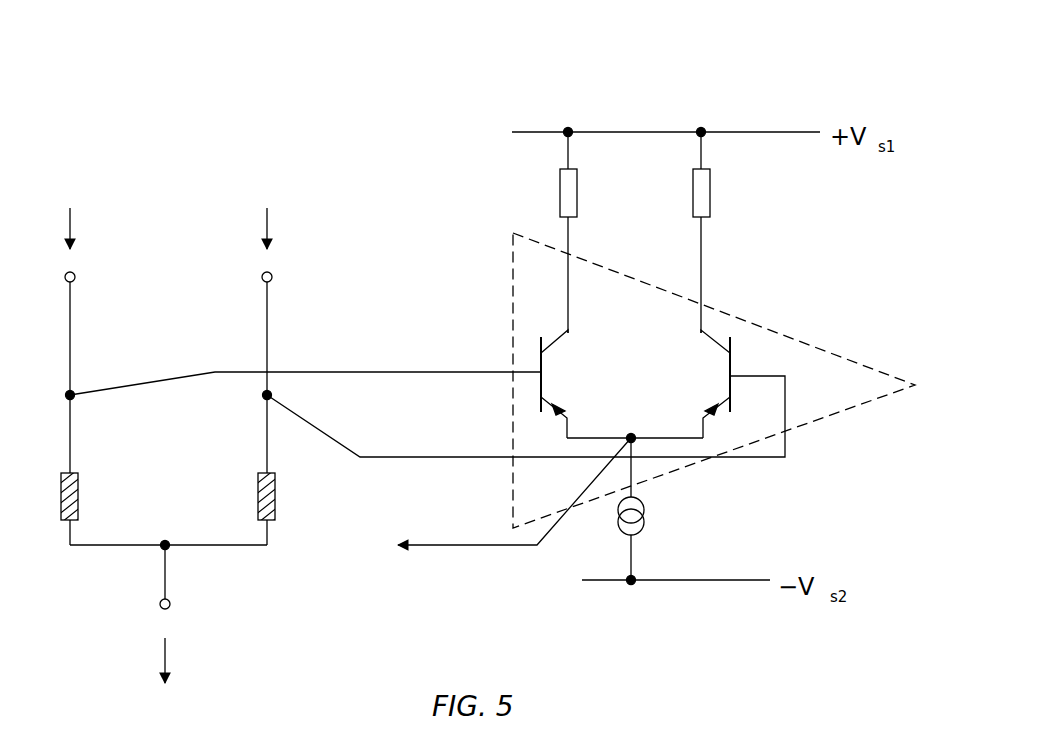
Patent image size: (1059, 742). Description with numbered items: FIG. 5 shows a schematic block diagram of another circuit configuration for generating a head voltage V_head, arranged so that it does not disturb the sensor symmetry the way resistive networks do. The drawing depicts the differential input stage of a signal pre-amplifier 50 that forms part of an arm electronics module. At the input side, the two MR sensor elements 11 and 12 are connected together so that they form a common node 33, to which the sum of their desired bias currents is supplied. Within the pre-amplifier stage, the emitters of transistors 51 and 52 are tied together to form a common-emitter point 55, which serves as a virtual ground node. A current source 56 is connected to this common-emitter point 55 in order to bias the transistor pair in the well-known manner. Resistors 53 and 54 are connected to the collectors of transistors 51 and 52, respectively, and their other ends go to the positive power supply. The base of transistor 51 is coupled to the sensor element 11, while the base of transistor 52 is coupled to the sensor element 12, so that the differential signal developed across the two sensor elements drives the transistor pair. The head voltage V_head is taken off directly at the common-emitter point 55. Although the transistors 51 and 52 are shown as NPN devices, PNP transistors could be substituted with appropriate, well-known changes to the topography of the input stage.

The sensor element 11 is at (70, 379).
The sensor element 12 is at (263, 379).
The common node 33 is at (168, 595).
The signal pre-amplifier 50 is at (470, 149).
The transistor 51 is at (560, 384).
The transistor 52 is at (708, 384).
The resistor 53 is at (549, 232).
The resistor 54 is at (721, 232).
The common-emitter point 55 is at (550, 499).
The current source 56 is at (650, 509).